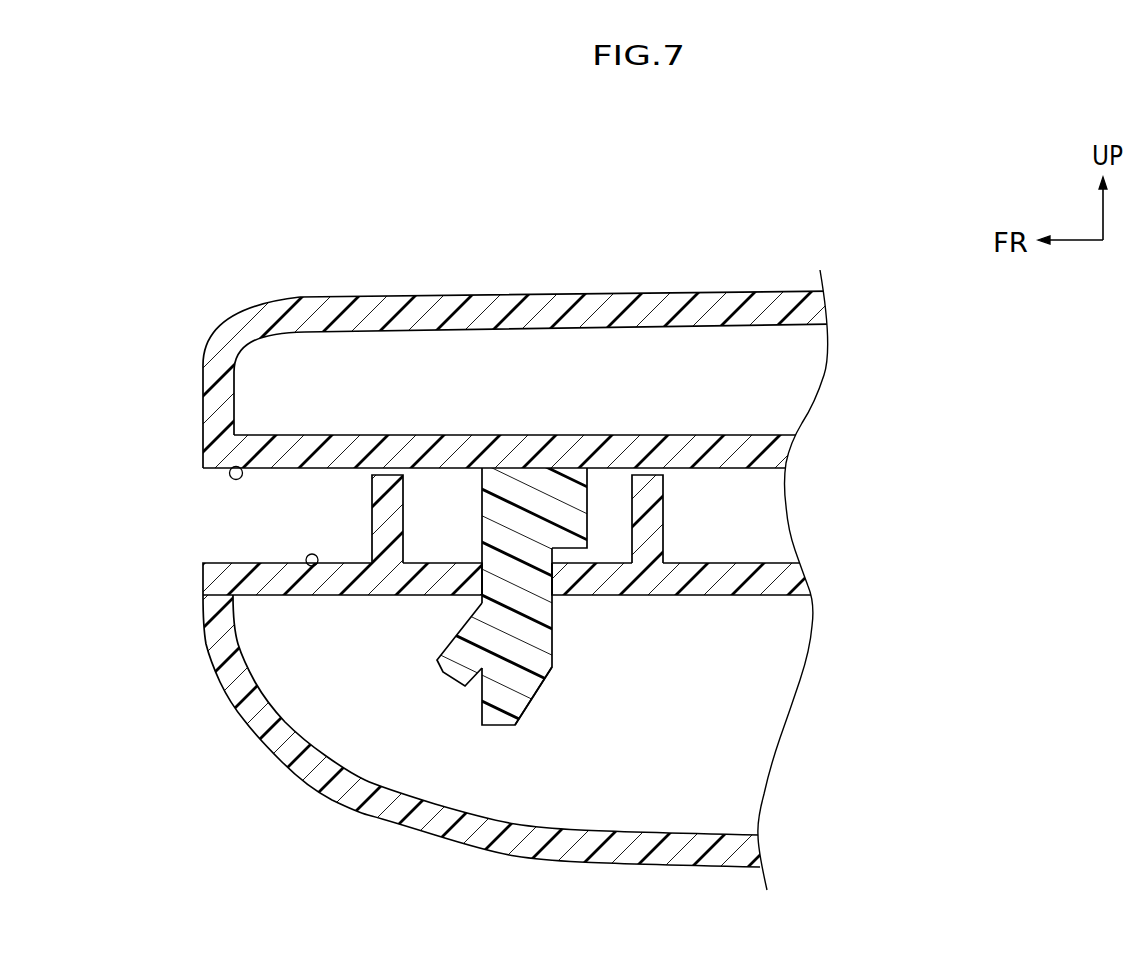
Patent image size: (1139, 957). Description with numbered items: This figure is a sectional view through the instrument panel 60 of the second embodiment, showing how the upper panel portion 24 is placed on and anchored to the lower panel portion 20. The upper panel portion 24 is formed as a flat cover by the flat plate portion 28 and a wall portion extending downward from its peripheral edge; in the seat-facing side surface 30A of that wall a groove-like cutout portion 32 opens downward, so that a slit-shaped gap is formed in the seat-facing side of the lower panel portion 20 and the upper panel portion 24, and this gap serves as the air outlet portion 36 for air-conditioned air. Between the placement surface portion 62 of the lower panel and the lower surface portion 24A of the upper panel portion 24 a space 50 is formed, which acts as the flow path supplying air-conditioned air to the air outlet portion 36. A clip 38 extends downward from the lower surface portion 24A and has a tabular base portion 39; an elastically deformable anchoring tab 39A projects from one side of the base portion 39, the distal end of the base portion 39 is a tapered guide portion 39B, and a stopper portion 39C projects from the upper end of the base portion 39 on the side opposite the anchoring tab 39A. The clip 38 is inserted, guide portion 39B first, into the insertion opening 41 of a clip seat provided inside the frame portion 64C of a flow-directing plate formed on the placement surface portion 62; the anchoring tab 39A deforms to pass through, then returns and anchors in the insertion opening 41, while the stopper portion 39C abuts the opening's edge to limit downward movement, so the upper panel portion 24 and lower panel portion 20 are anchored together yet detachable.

The lower panel portion 20 is at (302, 788).
The upper panel portion 24 is at (354, 270).
The lower surface portion 24A is at (704, 468).
The flat plate portion 28 is at (505, 290).
The side surface 30A is at (203, 389).
The cutout portion 32 is at (237, 467).
The air outlet portion 36 is at (203, 563).
The clip 38 is at (552, 705).
The base portion 39 is at (482, 502).
The anchoring tab 39A is at (445, 672).
The guide portion 39B is at (530, 705).
The stopper portion 39C is at (587, 522).
The insertion opening 41 is at (553, 607).
The space 50 is at (327, 521).
The instrument panel 60 is at (215, 790).
The placement surface portion 62 is at (314, 567).
The frame portion 64C is at (663, 528).